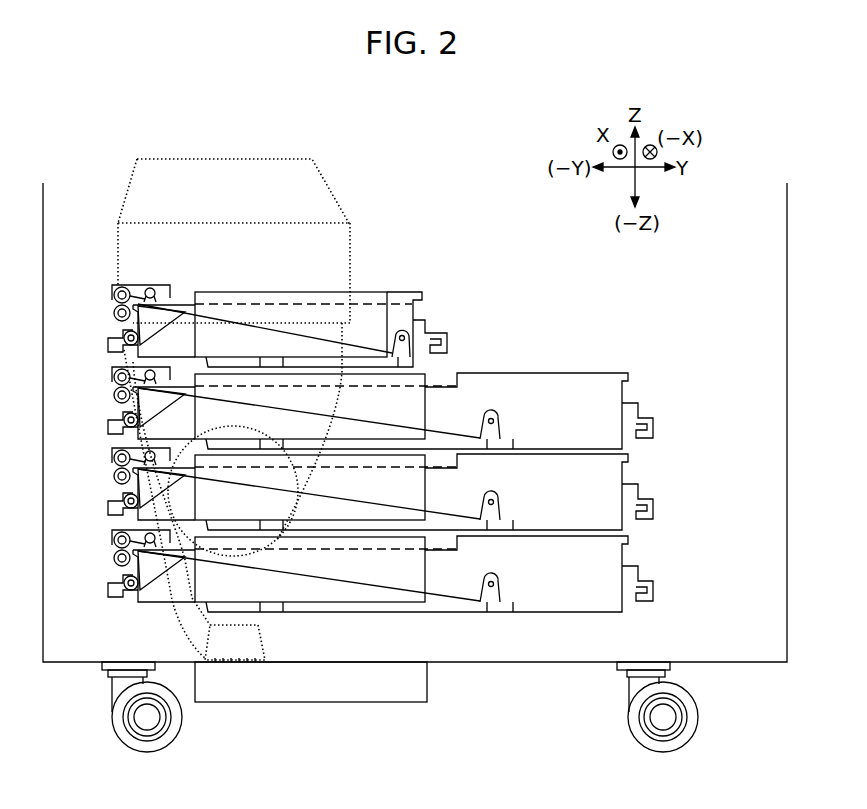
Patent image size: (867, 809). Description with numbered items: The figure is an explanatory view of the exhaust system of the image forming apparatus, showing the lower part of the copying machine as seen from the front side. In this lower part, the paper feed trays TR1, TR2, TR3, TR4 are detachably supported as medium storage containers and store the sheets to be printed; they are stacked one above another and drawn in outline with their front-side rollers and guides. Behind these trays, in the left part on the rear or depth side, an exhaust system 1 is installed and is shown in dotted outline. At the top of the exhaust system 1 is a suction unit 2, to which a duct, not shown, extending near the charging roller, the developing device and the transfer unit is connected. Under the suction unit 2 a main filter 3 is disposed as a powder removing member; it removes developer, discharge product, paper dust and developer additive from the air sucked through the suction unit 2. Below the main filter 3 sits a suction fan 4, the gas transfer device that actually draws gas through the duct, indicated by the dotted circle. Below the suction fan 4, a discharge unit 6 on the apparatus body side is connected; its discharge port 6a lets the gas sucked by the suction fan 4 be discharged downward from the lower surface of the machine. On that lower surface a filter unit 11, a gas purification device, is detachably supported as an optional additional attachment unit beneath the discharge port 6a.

The exhaust system 1 is at (112, 360).
The suction unit 2 is at (130, 182).
The main filter 3 is at (118, 247).
The suction fan 4 is at (135, 480).
The discharge unit 6 is at (203, 648).
The discharge port 6a is at (246, 650).
The filter unit 11 is at (370, 690).
The paper feed tray TR1 is at (400, 313).
The paper feed tray TR2 is at (597, 392).
The paper feed tray TR3 is at (597, 474).
The paper feed tray TR4 is at (597, 557).